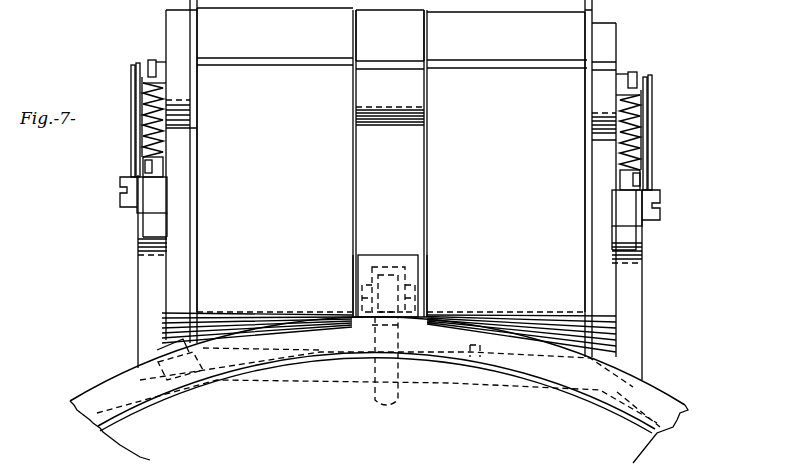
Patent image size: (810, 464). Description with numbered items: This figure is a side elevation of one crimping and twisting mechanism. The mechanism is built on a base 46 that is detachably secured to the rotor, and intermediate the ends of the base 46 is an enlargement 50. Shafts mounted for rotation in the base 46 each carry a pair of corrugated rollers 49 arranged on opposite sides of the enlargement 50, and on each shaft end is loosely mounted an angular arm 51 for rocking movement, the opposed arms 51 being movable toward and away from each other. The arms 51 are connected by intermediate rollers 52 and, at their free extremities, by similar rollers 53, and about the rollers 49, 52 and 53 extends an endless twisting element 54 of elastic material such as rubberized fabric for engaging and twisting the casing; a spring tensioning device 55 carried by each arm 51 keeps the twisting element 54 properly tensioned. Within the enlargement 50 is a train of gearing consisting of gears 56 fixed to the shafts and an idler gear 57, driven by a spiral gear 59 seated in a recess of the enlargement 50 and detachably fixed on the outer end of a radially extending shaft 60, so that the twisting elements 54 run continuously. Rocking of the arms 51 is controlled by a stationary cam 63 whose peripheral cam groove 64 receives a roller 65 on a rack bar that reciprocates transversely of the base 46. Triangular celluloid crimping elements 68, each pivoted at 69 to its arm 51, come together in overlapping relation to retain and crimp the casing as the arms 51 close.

The base 46 is at (138, 318).
The corrugated rollers 49 is at (356, 255).
The enlargement 50 is at (384, 257).
The angular arm 51 is at (178, 250).
The intermediate rollers 52 is at (396, 112).
The rollers 53 is at (390, 35).
The endless twisting element 54 is at (391, 160).
The spring tensioning device 55 is at (150, 62).
The gears 56 is at (358, 275).
The idler gear 57 is at (372, 277).
The spiral gear 59 is at (425, 267).
The radially extending shaft 60 is at (375, 373).
The stationary cam 63 is at (670, 398).
The cam groove 64 is at (472, 350).
The roller 65 is at (140, 370).
The crimping elements 68 is at (131, 158).
The pivot 69 is at (661, 202).